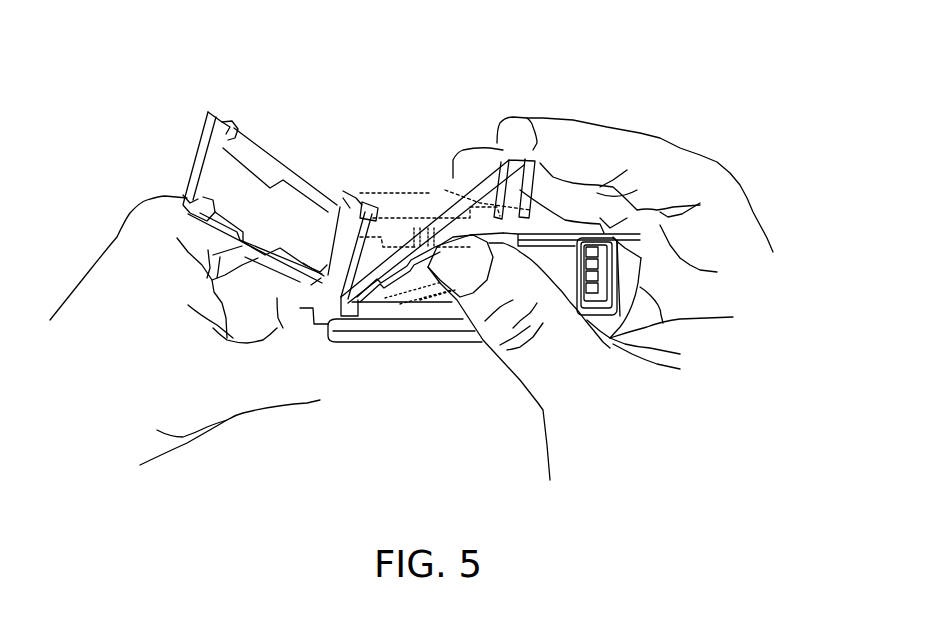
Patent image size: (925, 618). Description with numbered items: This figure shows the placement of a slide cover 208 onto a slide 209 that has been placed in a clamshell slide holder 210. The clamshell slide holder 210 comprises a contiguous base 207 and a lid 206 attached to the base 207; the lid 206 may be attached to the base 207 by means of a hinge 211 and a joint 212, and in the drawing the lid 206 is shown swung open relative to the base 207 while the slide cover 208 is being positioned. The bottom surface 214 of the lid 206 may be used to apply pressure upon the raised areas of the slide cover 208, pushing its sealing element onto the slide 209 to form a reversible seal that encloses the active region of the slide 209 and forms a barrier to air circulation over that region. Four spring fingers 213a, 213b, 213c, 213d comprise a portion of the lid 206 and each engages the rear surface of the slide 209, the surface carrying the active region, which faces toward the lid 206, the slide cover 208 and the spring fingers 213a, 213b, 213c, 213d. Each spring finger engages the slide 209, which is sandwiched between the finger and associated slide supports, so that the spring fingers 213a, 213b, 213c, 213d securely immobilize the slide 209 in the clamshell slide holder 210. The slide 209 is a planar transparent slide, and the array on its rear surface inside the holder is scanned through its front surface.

The lid 206 is at (211, 116).
The base 207 is at (433, 349).
The slide cover 208 is at (442, 193).
The slide 209 is at (559, 276).
The clamshell slide holder 210 is at (623, 258).
The hinge 211 is at (316, 303).
The joint 212 is at (367, 202).
The spring finger 213a is at (187, 199).
The spring finger 213b is at (317, 279).
The spring finger 213c is at (346, 199).
The spring finger 213d is at (226, 131).
The bottom surface 214 is at (268, 206).